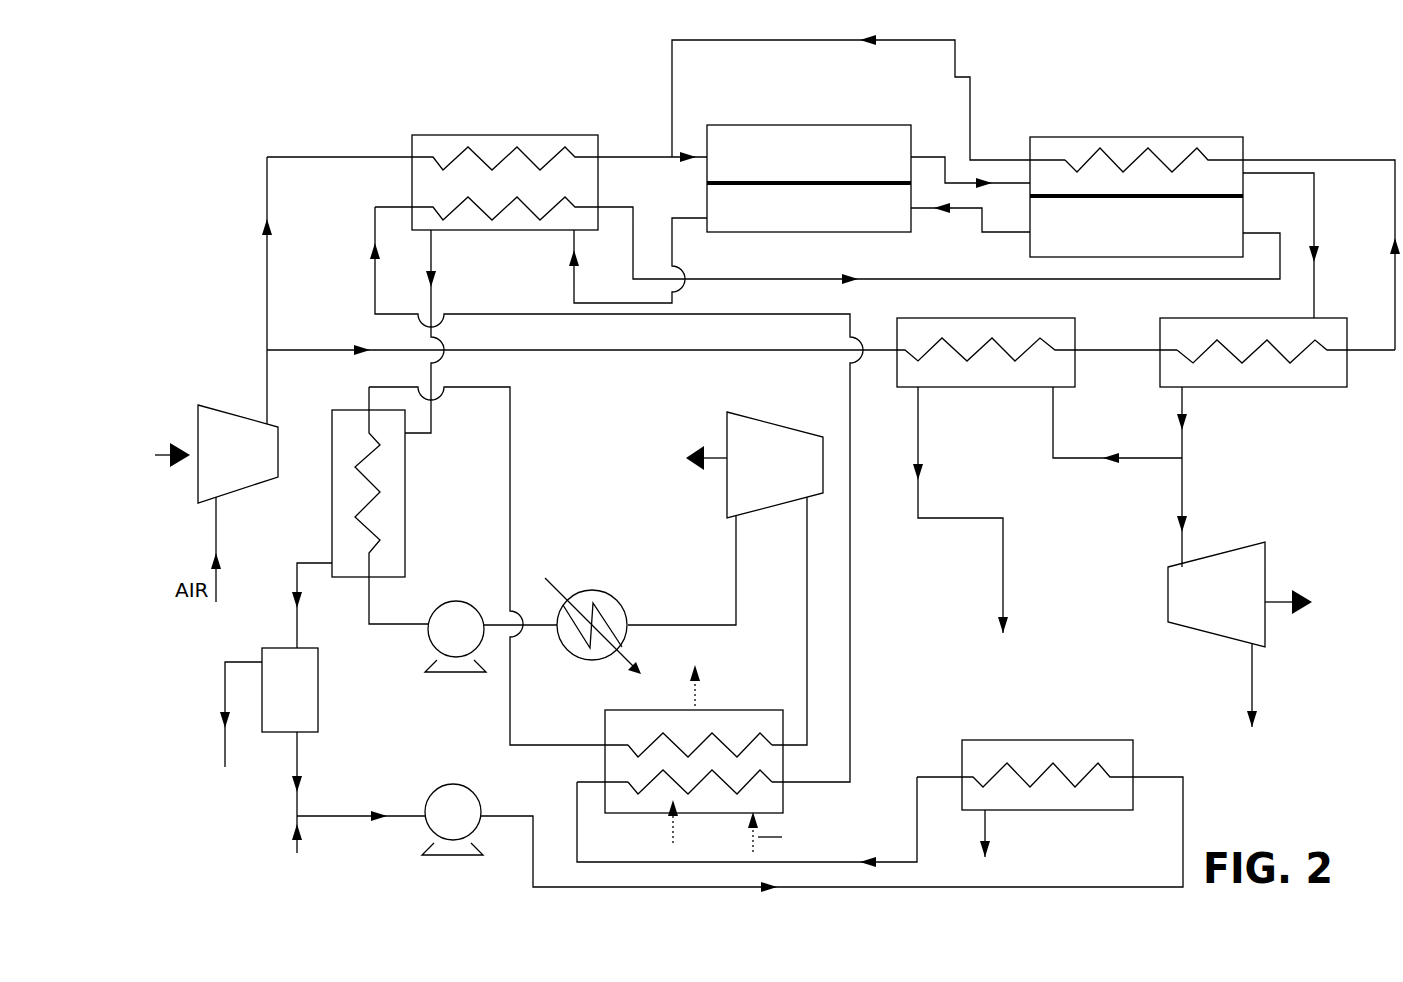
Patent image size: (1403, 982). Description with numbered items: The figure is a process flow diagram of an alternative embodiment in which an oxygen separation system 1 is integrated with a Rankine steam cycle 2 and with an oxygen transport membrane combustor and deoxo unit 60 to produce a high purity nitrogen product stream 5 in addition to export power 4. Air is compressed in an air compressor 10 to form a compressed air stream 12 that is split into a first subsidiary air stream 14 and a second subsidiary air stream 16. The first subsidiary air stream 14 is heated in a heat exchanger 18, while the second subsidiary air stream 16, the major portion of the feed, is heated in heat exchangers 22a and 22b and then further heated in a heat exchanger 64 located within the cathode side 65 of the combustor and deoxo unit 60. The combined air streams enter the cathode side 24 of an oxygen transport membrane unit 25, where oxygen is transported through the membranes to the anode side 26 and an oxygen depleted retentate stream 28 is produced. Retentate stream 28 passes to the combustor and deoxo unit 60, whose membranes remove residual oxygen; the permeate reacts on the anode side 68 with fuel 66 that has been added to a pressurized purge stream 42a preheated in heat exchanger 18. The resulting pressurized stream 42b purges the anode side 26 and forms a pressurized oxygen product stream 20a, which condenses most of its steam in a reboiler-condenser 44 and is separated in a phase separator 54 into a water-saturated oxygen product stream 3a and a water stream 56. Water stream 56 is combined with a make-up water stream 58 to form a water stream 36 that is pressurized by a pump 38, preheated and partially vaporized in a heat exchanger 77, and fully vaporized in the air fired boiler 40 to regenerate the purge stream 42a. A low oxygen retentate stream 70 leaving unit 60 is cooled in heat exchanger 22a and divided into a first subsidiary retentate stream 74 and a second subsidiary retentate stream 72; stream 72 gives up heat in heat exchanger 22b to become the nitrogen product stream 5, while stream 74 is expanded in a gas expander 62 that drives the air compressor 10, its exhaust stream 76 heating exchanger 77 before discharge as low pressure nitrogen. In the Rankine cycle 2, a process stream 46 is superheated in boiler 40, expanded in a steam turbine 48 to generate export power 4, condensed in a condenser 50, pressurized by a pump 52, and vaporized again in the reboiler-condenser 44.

The oxygen separation system 1 is at (590, 86).
The Rankine steam cycle 2 is at (554, 444).
The oxygen product stream 3a is at (224, 742).
The export power 4 is at (692, 470).
The high purity nitrogen product stream 5 is at (1007, 585).
The air compressor 10 is at (213, 482).
The compressed air stream 12 is at (267, 378).
The first subsidiary air stream 14 is at (267, 321).
The second subsidiary air stream 16 is at (310, 352).
The heat exchanger 18 is at (505, 135).
The pressurized oxygen product stream 20a is at (574, 280).
The heat exchanger 22a is at (1303, 387).
The heat exchanger 22b is at (988, 387).
The cathode side 24 is at (818, 167).
The oxygen transport membrane unit 25 is at (849, 116).
The anode side 26 is at (818, 219).
The retentate stream 28 is at (925, 157).
The water stream 36 is at (355, 817).
The pump 38 is at (453, 800).
The air fired boiler 40 is at (612, 728).
The pressurized purge stream 42a is at (850, 663).
The pressurized stream 42b is at (982, 235).
The reboiler-condenser 44 is at (405, 505).
The process stream 46 is at (511, 548).
The steam turbine 48 is at (790, 447).
The condenser 50 is at (614, 607).
The pump 52 is at (445, 625).
The phase separator 54 is at (278, 714).
The water stream 56 is at (297, 800).
The make-up water stream 58 is at (290, 825).
The oxygen transport membrane combustor and deoxo unit 60 is at (1250, 135).
The gas expander 62 is at (1195, 615).
The heat exchanger 64 is at (1103, 154).
The cathode side 65 is at (1161, 190).
The fuel 66 is at (760, 823).
The anode side 68 is at (1133, 232).
The retentate stream 70 is at (1314, 222).
The second subsidiary retentate stream 72 is at (1133, 462).
The first subsidiary retentate stream 74 is at (1185, 492).
The exhaust stream 76 is at (1253, 685).
The heat exchanger 77 is at (1040, 740).